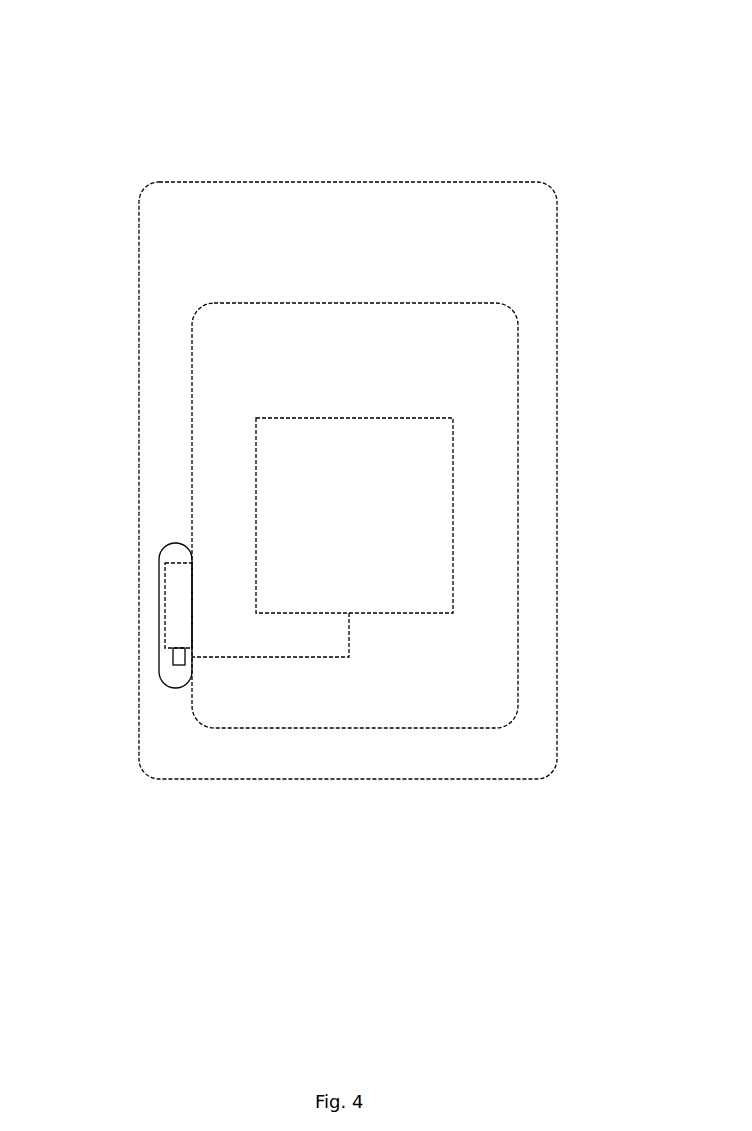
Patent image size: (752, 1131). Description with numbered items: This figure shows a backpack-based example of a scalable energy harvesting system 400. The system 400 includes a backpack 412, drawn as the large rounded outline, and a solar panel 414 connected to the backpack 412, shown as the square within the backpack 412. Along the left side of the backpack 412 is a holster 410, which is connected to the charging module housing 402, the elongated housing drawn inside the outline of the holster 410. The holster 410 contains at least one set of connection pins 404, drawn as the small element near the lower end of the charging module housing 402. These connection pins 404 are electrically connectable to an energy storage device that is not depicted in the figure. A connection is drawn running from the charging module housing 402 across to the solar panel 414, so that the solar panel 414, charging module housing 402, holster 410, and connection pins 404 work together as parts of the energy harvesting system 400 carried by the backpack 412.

The scalable energy harvesting system 400 is at (622, 100).
The charging module housing 402 is at (165, 558).
The connection pins 404 is at (173, 661).
The holster 410 is at (159, 615).
The backpack 412 is at (138, 308).
The solar panel 414 is at (256, 515).